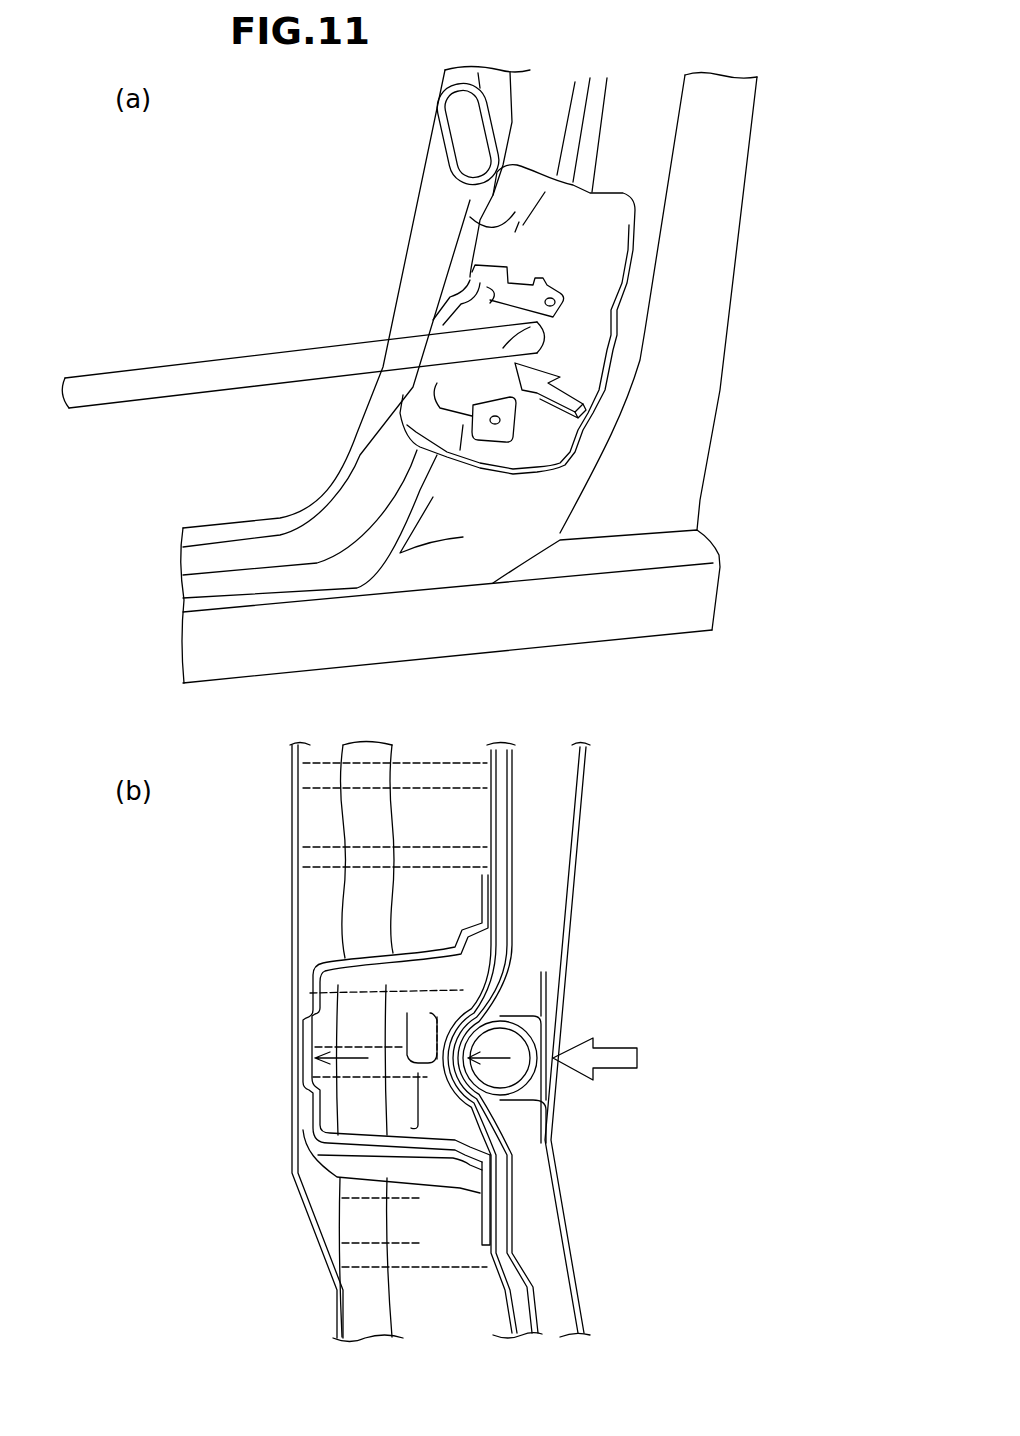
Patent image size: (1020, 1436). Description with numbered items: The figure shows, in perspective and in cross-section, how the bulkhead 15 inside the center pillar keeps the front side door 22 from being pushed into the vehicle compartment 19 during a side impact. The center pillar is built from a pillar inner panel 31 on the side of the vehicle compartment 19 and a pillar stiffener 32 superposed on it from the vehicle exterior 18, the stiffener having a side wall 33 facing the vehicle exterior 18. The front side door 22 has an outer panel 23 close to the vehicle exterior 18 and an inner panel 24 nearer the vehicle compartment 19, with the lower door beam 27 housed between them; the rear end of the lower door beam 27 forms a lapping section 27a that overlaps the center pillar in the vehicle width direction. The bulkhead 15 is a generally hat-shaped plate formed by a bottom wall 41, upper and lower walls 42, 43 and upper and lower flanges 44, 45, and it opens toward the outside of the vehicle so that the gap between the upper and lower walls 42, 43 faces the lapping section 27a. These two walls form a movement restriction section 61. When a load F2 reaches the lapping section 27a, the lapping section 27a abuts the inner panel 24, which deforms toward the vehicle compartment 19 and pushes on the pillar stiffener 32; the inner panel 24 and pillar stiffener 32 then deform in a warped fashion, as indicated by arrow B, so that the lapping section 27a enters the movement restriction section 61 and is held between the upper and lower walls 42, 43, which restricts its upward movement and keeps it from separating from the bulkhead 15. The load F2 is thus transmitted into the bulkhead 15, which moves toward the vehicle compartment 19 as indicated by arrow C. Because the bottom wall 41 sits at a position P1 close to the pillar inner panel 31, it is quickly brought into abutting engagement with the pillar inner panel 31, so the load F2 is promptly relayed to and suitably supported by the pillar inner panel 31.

The bulkhead 15 is at (437, 313).
The vehicle exterior 18 is at (735, 1136).
The vehicle compartment 19 is at (195, 1138).
The front side door 22 is at (575, 795).
The outer panel 23 is at (560, 867).
The inner panel 24 is at (513, 905).
The lower door beam 27 is at (197, 355).
The lapping section 27a is at (560, 333).
The pillar inner panel 31 is at (477, 222).
The pillar stiffener 32 is at (750, 175).
The side wall 33 is at (648, 247).
The bottom wall 41 is at (303, 1078).
The upper wall 42 is at (512, 268).
The lower wall 43 is at (540, 445).
The upper flange 44 is at (480, 898).
The lower flange 45 is at (477, 1223).
The movement restriction section 61 is at (462, 420).
The load F2 is at (570, 395).
The position P1 is at (292, 940).
The arrow B is at (500, 1058).
The arrow C is at (352, 1066).